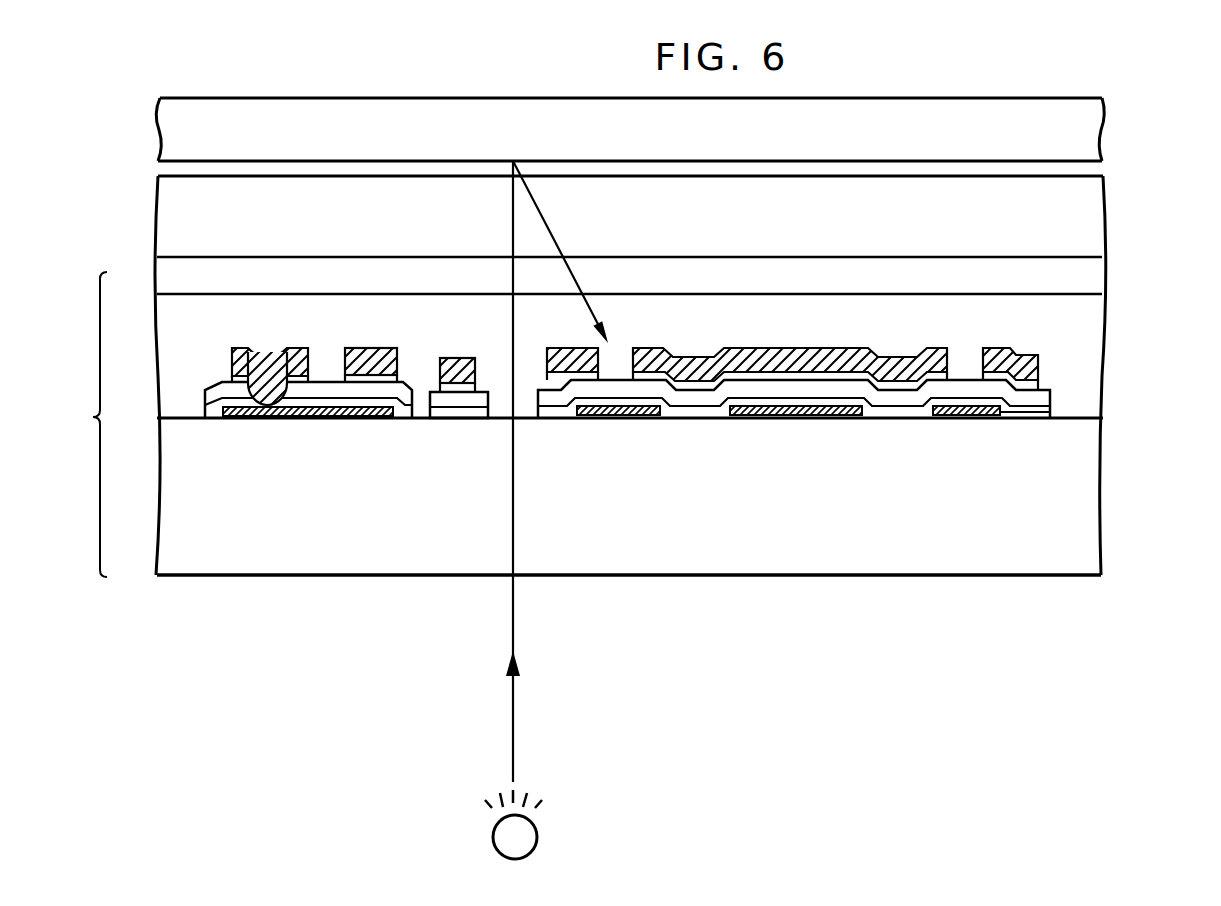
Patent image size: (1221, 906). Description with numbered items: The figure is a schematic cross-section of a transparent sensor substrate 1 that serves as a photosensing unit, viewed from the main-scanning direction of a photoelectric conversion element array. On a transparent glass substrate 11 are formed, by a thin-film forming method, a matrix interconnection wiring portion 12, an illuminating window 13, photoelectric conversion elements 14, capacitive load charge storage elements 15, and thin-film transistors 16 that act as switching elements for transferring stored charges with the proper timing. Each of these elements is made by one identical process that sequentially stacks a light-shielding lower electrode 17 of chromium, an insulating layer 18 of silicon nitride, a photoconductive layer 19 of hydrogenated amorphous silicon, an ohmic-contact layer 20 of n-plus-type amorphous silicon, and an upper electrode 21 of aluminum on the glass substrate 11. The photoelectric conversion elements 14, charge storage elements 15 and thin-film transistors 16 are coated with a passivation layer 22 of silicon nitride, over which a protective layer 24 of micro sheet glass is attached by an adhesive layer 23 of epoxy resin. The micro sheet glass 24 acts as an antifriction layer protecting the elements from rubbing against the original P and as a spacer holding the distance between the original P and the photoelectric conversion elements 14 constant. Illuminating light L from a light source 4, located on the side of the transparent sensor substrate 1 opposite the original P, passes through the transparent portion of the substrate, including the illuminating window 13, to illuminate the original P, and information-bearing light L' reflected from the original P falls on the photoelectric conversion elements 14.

The original P is at (1063, 108).
The transparent sensor substrate 1 is at (589, 376).
The light source 4 is at (538, 840).
The transparent glass substrate 11 is at (1082, 515).
The matrix interconnection wiring portion 12 is at (415, 444).
The illuminating window 13 is at (543, 444).
The photoelectric conversion element 14 is at (571, 444).
The capacitive load charge storage element 15 is at (875, 444).
The thin-film transistor 16 is at (913, 444).
The light-shielding lower electrode 17 is at (1027, 412).
The insulating layer 18 is at (1063, 416).
The photoconductive layer 19 is at (1053, 401).
The ohmic-contact layer 20 is at (1042, 384).
The upper electrode 21 is at (1040, 367).
The passivation layer 22 is at (1088, 318).
The adhesive layer 23 is at (1085, 278).
The protective layer 24 is at (1082, 205).
The illuminating light L is at (520, 471).
The information-bearing light L' is at (560, 252).